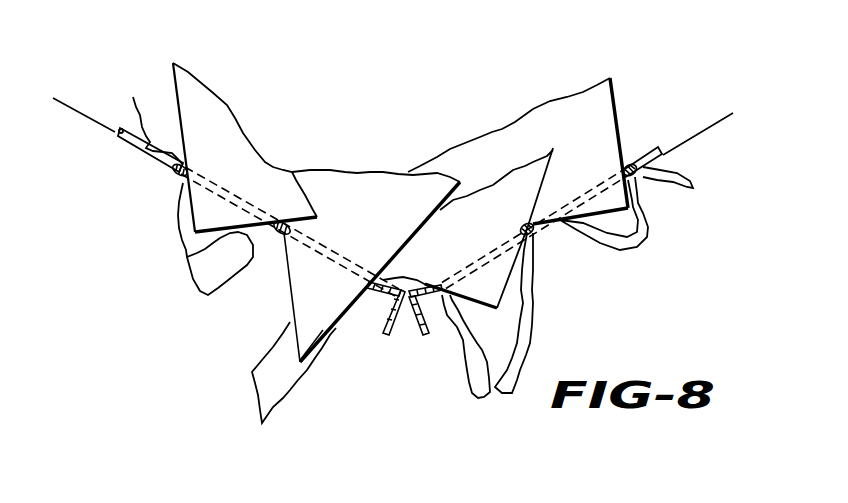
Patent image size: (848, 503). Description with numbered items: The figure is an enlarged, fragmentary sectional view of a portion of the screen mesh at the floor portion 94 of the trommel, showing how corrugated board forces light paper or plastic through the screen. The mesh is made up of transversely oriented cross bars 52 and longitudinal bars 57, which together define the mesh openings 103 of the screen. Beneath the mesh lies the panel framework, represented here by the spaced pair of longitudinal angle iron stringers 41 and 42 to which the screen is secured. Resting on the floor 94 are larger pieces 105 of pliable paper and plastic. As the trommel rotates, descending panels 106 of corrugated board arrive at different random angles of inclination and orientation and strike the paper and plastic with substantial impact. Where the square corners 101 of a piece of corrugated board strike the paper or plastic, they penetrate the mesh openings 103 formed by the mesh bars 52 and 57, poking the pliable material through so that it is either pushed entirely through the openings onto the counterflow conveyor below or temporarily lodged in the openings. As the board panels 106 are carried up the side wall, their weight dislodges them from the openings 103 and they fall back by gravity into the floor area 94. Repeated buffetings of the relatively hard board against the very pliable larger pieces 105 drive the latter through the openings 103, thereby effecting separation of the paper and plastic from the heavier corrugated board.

The floor portion of the trommel 94 is at (98, 128).
The cross bars 52 is at (140, 150).
The longitudinal bars 57 is at (178, 173).
The square corners 101 is at (196, 224).
The mesh openings 103 is at (217, 188).
The larger pieces of paper and plastic 105 is at (200, 290).
The panels of corrugated board 106 is at (243, 133).
The longitudinal angle iron stringer 42 is at (377, 327).
The longitudinal angle iron stringer 41 is at (423, 333).